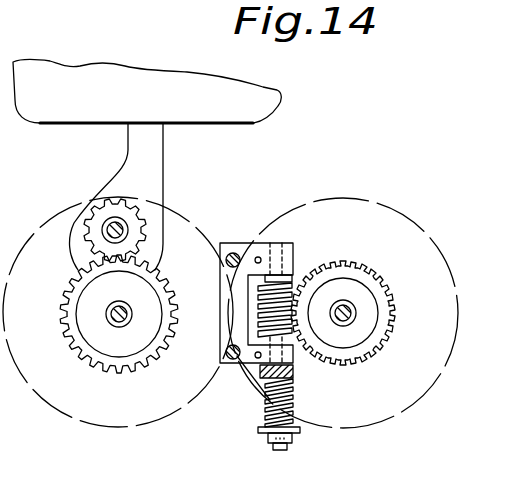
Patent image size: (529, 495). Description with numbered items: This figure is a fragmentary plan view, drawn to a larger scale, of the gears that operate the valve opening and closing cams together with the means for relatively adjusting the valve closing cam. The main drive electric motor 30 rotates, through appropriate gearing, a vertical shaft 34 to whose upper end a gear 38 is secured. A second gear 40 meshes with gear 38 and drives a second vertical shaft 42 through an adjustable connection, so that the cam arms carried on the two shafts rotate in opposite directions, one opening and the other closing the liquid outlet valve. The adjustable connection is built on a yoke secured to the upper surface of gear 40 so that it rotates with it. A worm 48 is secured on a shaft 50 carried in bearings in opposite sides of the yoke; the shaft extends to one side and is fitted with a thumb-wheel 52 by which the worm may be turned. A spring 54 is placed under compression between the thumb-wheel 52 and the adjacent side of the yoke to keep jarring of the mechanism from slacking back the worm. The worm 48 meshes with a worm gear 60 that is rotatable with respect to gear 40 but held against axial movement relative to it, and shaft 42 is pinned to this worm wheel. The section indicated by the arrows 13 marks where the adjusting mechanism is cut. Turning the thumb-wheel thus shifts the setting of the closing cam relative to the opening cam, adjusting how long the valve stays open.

The main drive electric motor 30 is at (246, 113).
The vertical shaft 34 is at (106, 313).
The gear 38 is at (43, 213).
The second gear 40 is at (371, 199).
The worm gear 48 is at (293, 283).
The worm gear 60 is at (358, 265).
The second vertical shaft 42 is at (352, 315).
The shaft 50 is at (262, 368).
The spring 54 is at (268, 405).
The thumb-wheel 52 is at (260, 434).
The section line 13- 13 is at (200, 313).